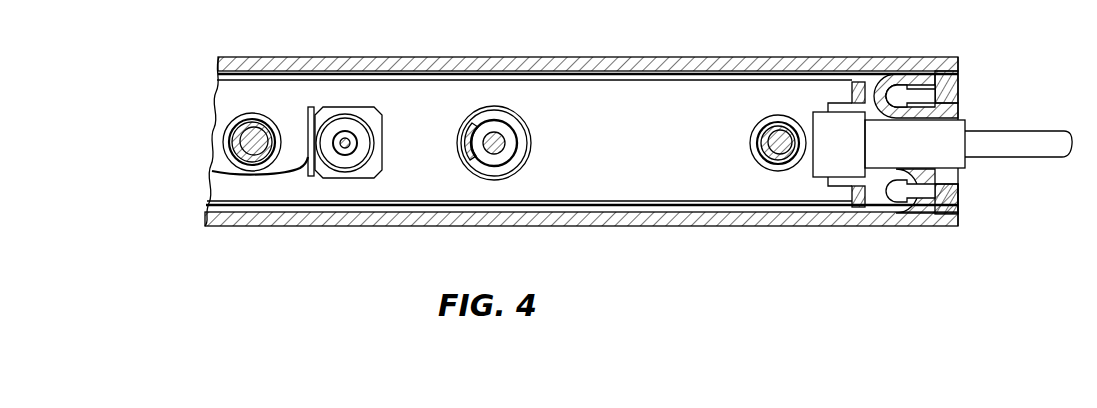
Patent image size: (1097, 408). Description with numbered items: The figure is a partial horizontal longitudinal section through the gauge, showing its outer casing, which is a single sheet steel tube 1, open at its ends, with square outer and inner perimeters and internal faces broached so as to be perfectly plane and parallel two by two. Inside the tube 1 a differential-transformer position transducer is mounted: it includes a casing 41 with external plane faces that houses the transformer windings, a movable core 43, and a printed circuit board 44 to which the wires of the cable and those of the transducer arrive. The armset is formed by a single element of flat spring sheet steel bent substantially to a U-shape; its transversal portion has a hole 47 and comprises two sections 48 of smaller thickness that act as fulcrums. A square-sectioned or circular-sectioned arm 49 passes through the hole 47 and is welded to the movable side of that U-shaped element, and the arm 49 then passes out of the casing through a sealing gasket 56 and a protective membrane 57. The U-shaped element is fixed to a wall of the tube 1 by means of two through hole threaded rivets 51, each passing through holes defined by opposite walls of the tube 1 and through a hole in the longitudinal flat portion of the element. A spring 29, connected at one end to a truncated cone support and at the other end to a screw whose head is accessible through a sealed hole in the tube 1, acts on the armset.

The sheet steel tube 1 is at (448, 225).
The spring 29 is at (522, 148).
The casing 41 is at (371, 161).
The movable core 43 is at (348, 140).
The printed circuit board 44 is at (308, 175).
The hole 47 is at (838, 106).
The sections of smaller thickness 48 is at (851, 93).
The arm 49 is at (1049, 132).
The through hole threaded rivets 51 is at (257, 127).
The sealing gasket 56 is at (957, 178).
The protective membrane 57 is at (957, 93).